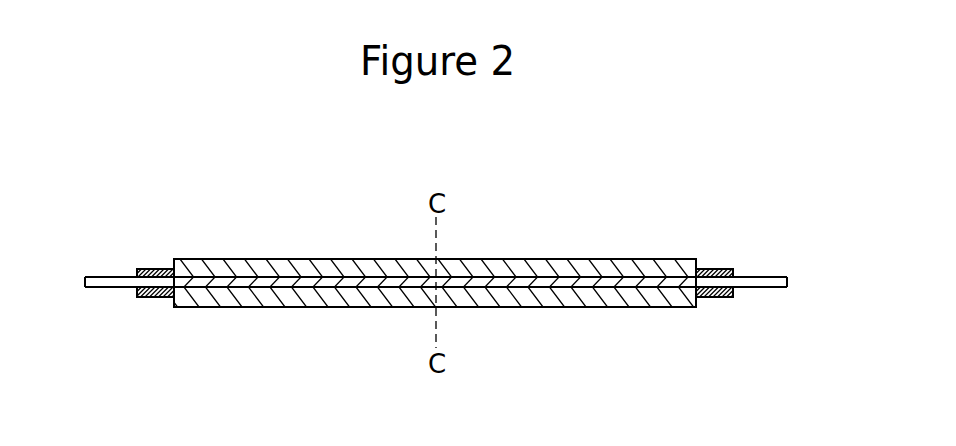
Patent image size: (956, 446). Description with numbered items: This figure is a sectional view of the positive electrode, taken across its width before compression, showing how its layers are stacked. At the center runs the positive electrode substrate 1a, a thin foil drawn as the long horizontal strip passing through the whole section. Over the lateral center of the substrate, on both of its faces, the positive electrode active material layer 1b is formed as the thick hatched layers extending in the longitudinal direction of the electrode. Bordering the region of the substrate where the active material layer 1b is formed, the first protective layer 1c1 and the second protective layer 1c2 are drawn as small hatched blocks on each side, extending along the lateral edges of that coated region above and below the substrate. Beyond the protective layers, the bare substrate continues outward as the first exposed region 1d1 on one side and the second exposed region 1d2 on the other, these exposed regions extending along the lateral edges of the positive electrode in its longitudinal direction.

The positive electrode substrate 1a is at (527, 282).
The positive electrode active material layer 1b is at (318, 270).
The first protective layer 1c1 is at (156, 271).
The second protective layer 1c2 is at (715, 270).
The first exposed region 1d1 is at (112, 282).
The second exposed region 1d2 is at (757, 280).